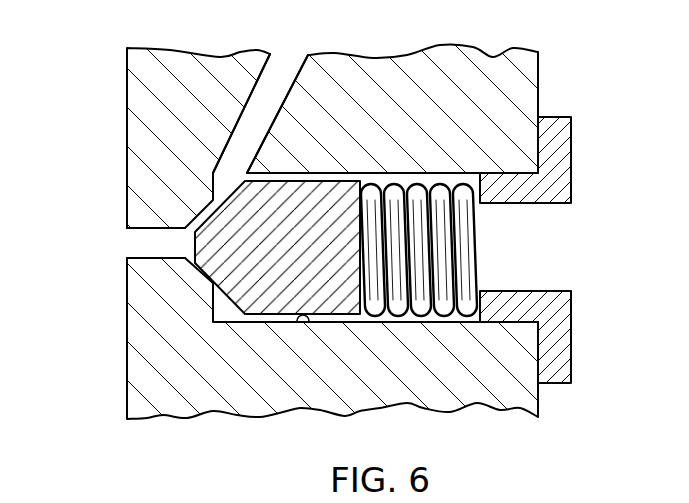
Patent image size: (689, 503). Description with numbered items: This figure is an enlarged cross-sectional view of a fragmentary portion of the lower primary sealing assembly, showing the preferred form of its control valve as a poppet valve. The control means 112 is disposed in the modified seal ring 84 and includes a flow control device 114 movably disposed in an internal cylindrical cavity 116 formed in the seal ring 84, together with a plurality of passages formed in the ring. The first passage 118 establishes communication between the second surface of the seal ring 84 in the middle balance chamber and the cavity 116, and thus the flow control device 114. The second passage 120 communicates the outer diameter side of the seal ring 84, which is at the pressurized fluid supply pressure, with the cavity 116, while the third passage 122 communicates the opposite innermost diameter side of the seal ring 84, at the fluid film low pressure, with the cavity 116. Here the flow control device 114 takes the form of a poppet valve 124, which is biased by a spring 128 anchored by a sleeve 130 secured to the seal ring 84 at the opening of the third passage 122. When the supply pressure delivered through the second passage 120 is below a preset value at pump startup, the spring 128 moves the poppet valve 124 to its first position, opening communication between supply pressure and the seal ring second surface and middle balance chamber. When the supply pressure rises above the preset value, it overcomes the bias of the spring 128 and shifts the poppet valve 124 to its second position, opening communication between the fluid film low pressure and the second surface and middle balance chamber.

The modified seal ring 84 is at (135, 363).
The control means 112 is at (112, 155).
The flow control device 114 is at (344, 340).
The internal cylindrical cavity 116 is at (294, 322).
The first passage 118 is at (274, 86).
The second passage 120 is at (153, 231).
The third passage 122 is at (458, 323).
The poppet valve 124 is at (259, 305).
The spring 128 is at (450, 258).
The sleeve 130 is at (573, 168).